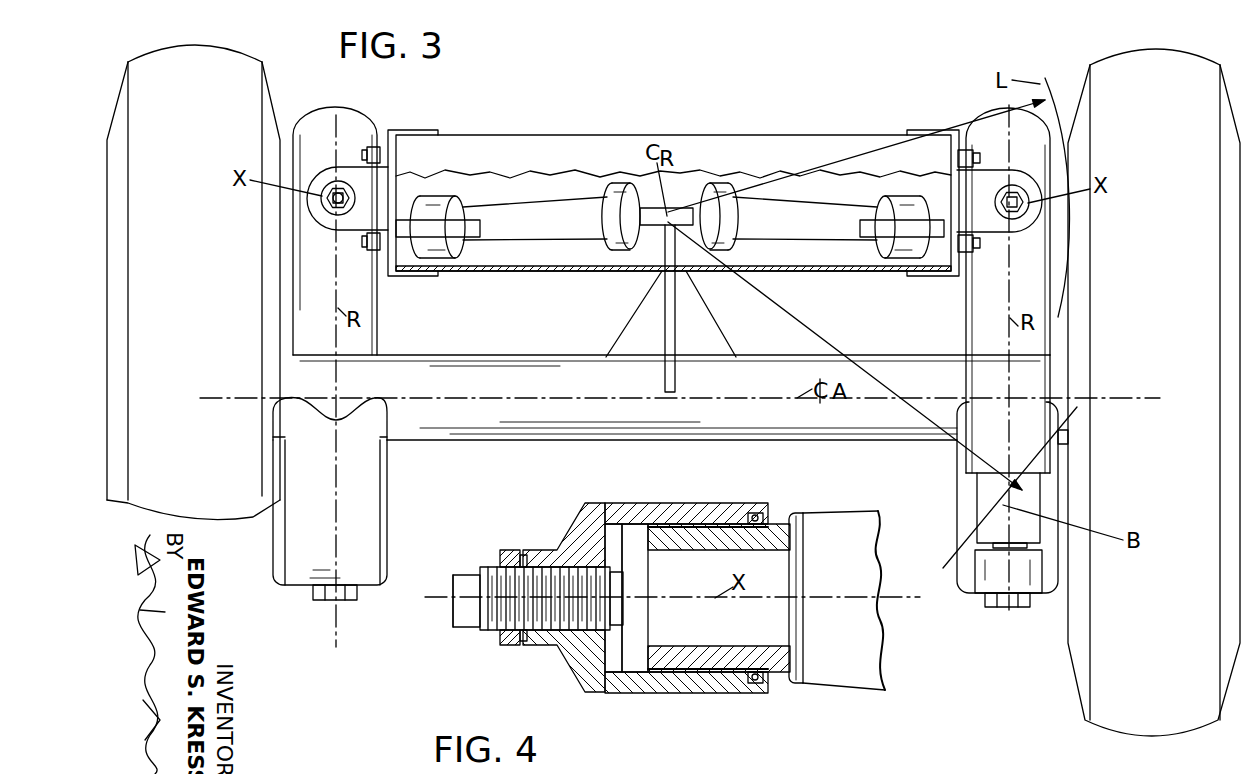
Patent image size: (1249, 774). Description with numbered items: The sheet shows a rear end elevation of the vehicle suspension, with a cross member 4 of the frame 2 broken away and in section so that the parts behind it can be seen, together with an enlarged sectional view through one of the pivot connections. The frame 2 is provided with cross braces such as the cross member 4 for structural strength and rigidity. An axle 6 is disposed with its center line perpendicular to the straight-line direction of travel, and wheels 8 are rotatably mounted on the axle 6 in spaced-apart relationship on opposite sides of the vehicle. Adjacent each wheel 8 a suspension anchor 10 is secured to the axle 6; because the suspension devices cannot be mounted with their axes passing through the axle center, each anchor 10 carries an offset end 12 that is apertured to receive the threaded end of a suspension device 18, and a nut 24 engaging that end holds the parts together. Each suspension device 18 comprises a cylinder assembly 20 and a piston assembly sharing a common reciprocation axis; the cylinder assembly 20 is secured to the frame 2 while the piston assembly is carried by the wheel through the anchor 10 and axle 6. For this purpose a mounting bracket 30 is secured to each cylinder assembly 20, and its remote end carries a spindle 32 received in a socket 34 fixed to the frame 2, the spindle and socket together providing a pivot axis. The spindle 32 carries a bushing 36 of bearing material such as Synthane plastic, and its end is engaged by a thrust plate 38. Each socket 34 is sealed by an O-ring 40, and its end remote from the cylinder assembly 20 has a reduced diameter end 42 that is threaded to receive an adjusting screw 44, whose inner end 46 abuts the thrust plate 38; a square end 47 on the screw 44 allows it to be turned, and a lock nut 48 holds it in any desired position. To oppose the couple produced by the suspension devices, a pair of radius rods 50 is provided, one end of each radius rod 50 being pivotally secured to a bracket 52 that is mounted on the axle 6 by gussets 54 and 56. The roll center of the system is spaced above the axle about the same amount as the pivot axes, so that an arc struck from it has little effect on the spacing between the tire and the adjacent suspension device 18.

In FIG. 3, the frame 2 is at (404, 131).
In FIG. 3, the cross member 4 is at (624, 147).
In FIG. 3, the axle 6 is at (517, 441).
In FIG. 3, the wheels 8 is at (242, 102).
In FIG. 3, the suspension anchor 10 is at (373, 558).
In FIG. 3, the offset end 12 is at (973, 596).
In FIG. 3, the suspension device 18 is at (292, 335).
In FIG. 3, the cylinder assembly 20 is at (358, 344).
In FIG. 3, the nut 24 is at (1008, 600).
In FIG. 4, the mounting bracket 30 is at (868, 684).
In FIG. 4, the spindle 32 is at (700, 660).
In FIG. 3, the socket 34 is at (313, 212).
In FIG. 4, the socket 34 is at (684, 516).
In FIG. 4, the bushing 36 is at (730, 666).
In FIG. 4, the thrust plate 38 is at (642, 543).
In FIG. 4, the O-ring 40 is at (756, 684).
In FIG. 4, the reduced diameter end 42 is at (547, 556).
In FIG. 4, the adjusting screw 44 is at (485, 623).
In FIG. 4, the inner end 46 is at (618, 612).
In FIG. 3, the square end 47 is at (337, 192).
In FIG. 4, the square end 47 is at (458, 610).
In FIG. 4, the lock nut 48 is at (510, 645).
In FIG. 3, the radius rod 50 is at (543, 227).
In FIG. 3, the bracket 52 is at (652, 232).
In FIG. 3, the gusset 54 is at (633, 321).
In FIG. 3, the gusset 56 is at (665, 340).